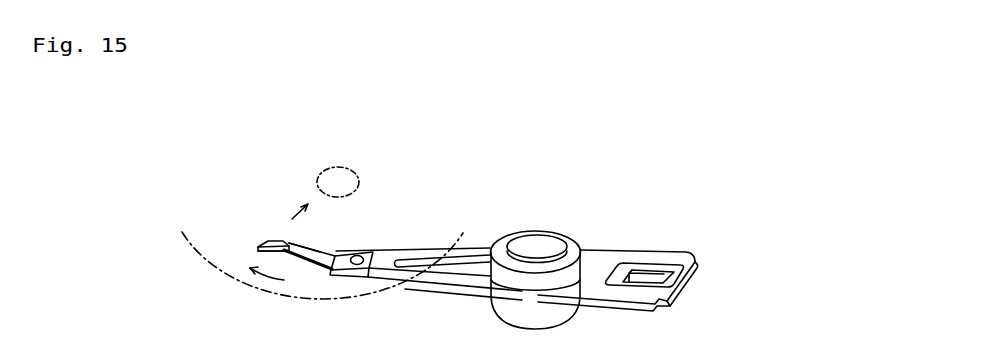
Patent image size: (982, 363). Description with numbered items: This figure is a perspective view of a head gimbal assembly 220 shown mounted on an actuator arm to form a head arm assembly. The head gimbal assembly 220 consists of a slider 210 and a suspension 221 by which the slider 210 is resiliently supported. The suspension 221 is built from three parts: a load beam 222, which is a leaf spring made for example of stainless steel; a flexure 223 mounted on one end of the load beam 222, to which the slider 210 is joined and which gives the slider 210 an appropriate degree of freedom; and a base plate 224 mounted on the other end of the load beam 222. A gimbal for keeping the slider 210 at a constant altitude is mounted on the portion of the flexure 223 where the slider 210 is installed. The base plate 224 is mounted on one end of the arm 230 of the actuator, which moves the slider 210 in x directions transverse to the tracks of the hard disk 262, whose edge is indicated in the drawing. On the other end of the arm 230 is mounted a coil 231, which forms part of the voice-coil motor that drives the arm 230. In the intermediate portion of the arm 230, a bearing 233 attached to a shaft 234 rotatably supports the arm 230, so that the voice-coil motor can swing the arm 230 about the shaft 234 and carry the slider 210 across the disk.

The slider 210 is at (273, 240).
The head gimbal assembly 220 is at (326, 292).
The suspension 221 is at (324, 225).
The load beam 222 is at (340, 252).
The flexure 223 is at (256, 248).
The base plate 224 is at (378, 253).
The arm 230 is at (413, 283).
The coil 231 is at (688, 290).
The bearing 233 is at (496, 238).
The shaft 234 is at (543, 237).
The hard disk 262 is at (278, 292).